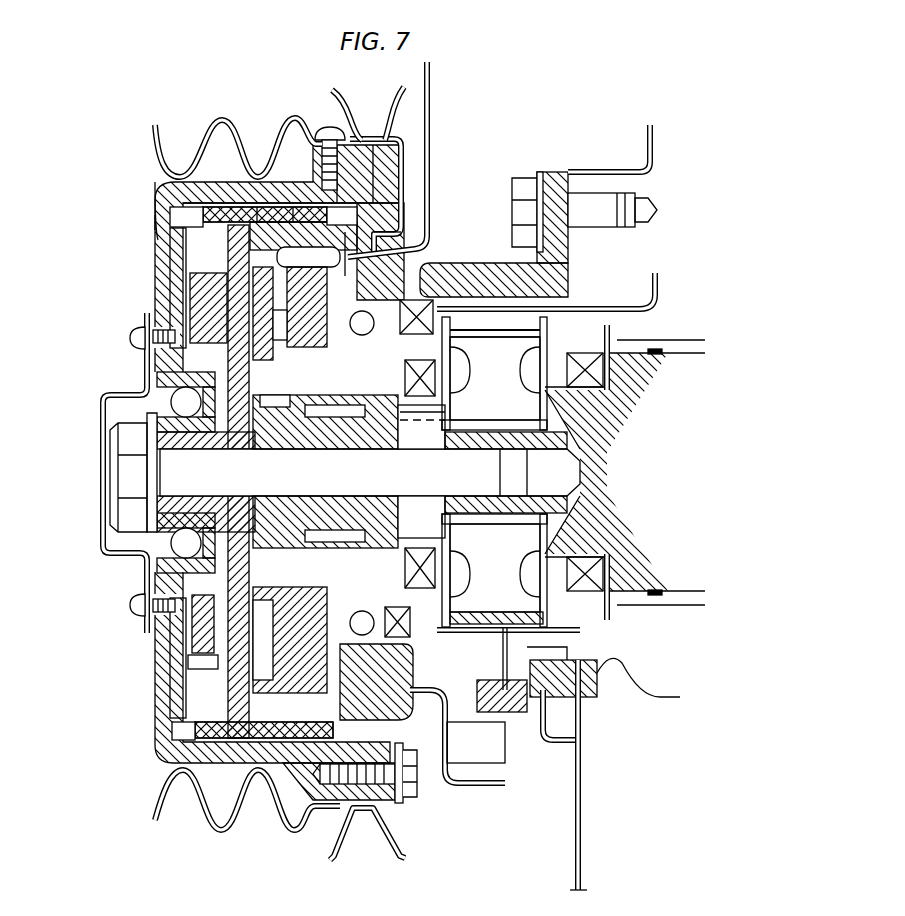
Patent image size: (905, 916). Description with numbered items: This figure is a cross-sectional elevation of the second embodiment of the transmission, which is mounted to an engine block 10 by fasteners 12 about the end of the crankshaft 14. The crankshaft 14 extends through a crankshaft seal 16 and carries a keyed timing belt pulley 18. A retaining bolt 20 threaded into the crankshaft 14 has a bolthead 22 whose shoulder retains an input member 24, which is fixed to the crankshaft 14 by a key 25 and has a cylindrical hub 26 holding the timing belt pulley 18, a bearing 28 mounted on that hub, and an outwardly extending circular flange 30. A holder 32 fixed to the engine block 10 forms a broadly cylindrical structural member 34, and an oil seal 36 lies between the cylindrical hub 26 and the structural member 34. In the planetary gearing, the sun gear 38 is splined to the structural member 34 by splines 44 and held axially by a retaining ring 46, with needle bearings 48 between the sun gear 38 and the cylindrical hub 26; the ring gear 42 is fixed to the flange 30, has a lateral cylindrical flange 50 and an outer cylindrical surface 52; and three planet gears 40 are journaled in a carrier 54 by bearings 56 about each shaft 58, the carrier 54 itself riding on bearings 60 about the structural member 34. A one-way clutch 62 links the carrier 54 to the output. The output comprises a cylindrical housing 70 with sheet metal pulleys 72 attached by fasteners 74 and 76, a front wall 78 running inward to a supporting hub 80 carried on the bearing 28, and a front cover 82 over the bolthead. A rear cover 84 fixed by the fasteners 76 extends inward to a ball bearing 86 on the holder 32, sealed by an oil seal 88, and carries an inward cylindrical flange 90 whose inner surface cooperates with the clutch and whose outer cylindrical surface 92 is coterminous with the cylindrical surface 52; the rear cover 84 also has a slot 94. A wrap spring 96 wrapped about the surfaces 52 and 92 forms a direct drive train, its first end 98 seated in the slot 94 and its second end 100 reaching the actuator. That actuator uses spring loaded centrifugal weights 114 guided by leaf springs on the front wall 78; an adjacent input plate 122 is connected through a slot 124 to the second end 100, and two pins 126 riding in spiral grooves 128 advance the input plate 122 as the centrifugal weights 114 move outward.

The engine block 10 is at (578, 178).
The fasteners 12 is at (597, 213).
The crankshaft 14 is at (622, 352).
The crankshaft seal 16 is at (581, 591).
The timing belt pulley 18 is at (543, 321).
The retaining bolt 20 is at (478, 496).
The bolthead 22 is at (118, 478).
The input member 24 is at (295, 512).
The key 25 is at (418, 430).
The cylindrical hub 26 is at (322, 422).
The bearing 28 is at (149, 566).
The circular flange 30 is at (210, 428).
The holder 32 is at (474, 270).
The structural member 34 is at (418, 628).
The oil seal 36 is at (423, 566).
The sun gear 38 is at (240, 445).
The planet gears 40 is at (233, 272).
The ring gear 42 is at (240, 200).
The splines 44 is at (289, 422).
The retaining ring 46 is at (423, 372).
The needle bearings 48 is at (402, 445).
The cylindrical flange 50 is at (178, 223).
The cylindrical surface 52 is at (208, 148).
The carrier 54 is at (432, 245).
The bearings 56 is at (270, 292).
The shaft 58 is at (298, 609).
The bearings 60 is at (286, 322).
The one-way clutch 62 is at (378, 236).
The cylindrical housing 70 is at (342, 205).
The pulleys 72 is at (237, 830).
The fasteners 74 is at (323, 135).
The fasteners 76 is at (410, 802).
The front wall 78 is at (156, 226).
The supporting hub 80 is at (162, 357).
The front cover 82 is at (103, 441).
The rear cover 84 is at (410, 155).
The ball bearing 86 is at (380, 258).
The oil seal 88 is at (441, 312).
The cylindrical flange 90 is at (362, 203).
The cylindrical surface 92 is at (294, 222).
The slot 94 is at (383, 180).
The wrap spring 96 is at (258, 205).
The first end 98 is at (357, 116).
The second end 100 is at (176, 207).
The centrifugal weights 114 is at (178, 278).
The input plate 122 is at (176, 252).
The slot 124 is at (203, 210).
The pins 126 is at (198, 638).
The spiral grooves 128 is at (196, 655).